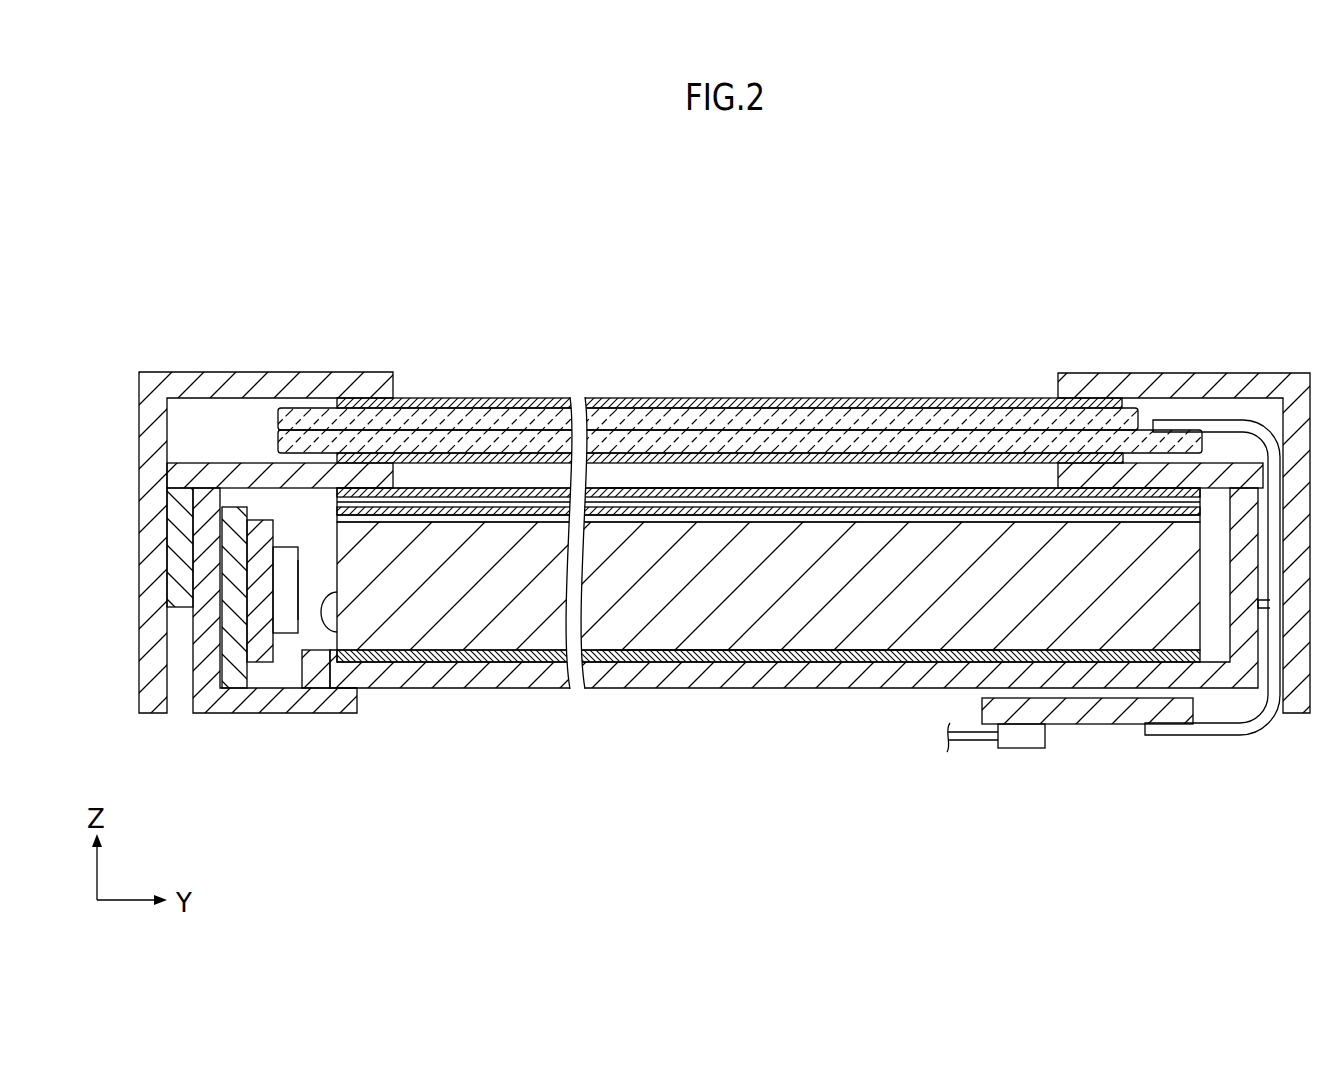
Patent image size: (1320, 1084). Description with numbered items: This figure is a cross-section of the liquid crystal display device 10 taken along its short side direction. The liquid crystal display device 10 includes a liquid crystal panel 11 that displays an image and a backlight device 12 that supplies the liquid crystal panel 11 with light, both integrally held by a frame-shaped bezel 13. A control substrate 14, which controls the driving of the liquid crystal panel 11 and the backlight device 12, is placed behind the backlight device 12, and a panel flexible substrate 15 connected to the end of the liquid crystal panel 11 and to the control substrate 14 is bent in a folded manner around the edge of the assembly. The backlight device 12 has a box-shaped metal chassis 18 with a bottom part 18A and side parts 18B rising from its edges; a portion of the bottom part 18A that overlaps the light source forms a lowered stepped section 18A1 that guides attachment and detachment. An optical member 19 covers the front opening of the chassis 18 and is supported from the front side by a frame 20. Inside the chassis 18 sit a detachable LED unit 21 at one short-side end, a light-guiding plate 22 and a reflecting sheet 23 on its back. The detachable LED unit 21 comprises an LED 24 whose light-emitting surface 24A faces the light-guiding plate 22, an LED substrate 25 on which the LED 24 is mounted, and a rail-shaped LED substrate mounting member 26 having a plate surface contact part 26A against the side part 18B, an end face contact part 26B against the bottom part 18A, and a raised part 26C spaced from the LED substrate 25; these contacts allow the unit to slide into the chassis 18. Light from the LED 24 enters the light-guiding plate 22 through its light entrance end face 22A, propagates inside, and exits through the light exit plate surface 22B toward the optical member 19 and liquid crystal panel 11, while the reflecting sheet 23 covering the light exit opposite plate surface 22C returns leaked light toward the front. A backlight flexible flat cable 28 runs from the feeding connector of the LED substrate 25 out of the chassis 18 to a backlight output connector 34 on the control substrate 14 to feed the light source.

The liquid crystal display device 10 is at (972, 284).
The liquid crystal panel 11 is at (490, 398).
The backlight device 12 is at (425, 778).
The bezel 13 is at (1107, 380).
The control substrate 14 is at (1110, 726).
The panel flexible substrate 15 is at (1263, 425).
The chassis 18 is at (555, 690).
The bottom part 18A is at (520, 677).
The stepped section 18A1 is at (343, 713).
The side part 18B is at (155, 712).
The optical member 19 is at (717, 522).
The frame 20 is at (1211, 467).
The detachable LED unit 21 is at (224, 486).
The light-guiding plate 22 is at (760, 547).
The light entrance end face 22A is at (365, 665).
The light exit plate surface 22B is at (817, 488).
The light exit opposite plate surface 22C is at (792, 652).
The reflecting sheet 23 is at (840, 657).
The LED 24 is at (309, 462).
The light-emitting surface 24A is at (312, 568).
The LED substrate 25 is at (261, 522).
The LED substrate mounting member 26 is at (263, 560).
The plate surface contact part 26A is at (205, 715).
The end face contact part 26B is at (258, 715).
The raised part 26C is at (312, 700).
The backlight flexible flat cable 28 is at (978, 738).
The backlight output connector 34 is at (1022, 740).